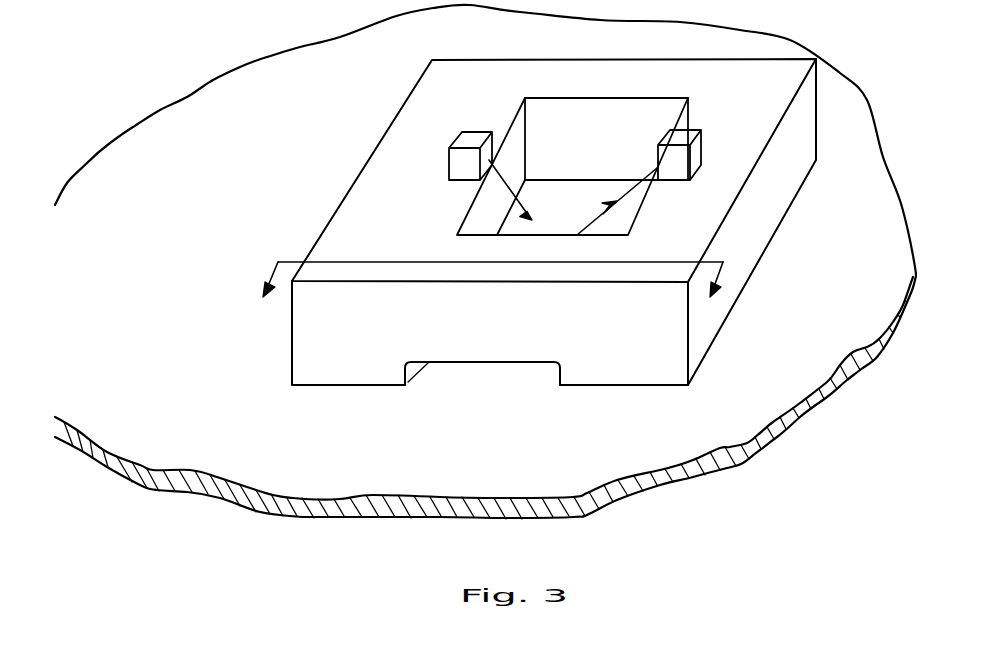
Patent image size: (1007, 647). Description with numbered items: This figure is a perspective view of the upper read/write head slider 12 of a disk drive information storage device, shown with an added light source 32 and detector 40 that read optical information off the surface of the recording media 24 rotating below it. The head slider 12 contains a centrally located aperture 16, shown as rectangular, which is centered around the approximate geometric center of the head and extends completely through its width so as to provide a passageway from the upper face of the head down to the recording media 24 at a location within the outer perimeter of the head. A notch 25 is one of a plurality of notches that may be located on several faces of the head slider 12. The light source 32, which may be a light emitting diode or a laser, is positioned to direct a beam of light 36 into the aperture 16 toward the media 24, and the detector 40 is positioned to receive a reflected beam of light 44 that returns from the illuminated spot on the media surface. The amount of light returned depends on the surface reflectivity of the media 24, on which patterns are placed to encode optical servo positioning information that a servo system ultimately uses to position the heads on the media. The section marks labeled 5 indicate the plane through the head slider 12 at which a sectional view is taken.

The upper read/write head slider 12 is at (447, 57).
The aperture 16 is at (590, 117).
The recording media 24 is at (872, 130).
The notch 25 is at (553, 362).
The light source 32 is at (473, 128).
The beam of light 36 is at (497, 172).
The detector 40 is at (692, 128).
The reflected beam of light 44 is at (643, 197).
The section line 5- 5 is at (490, 291).